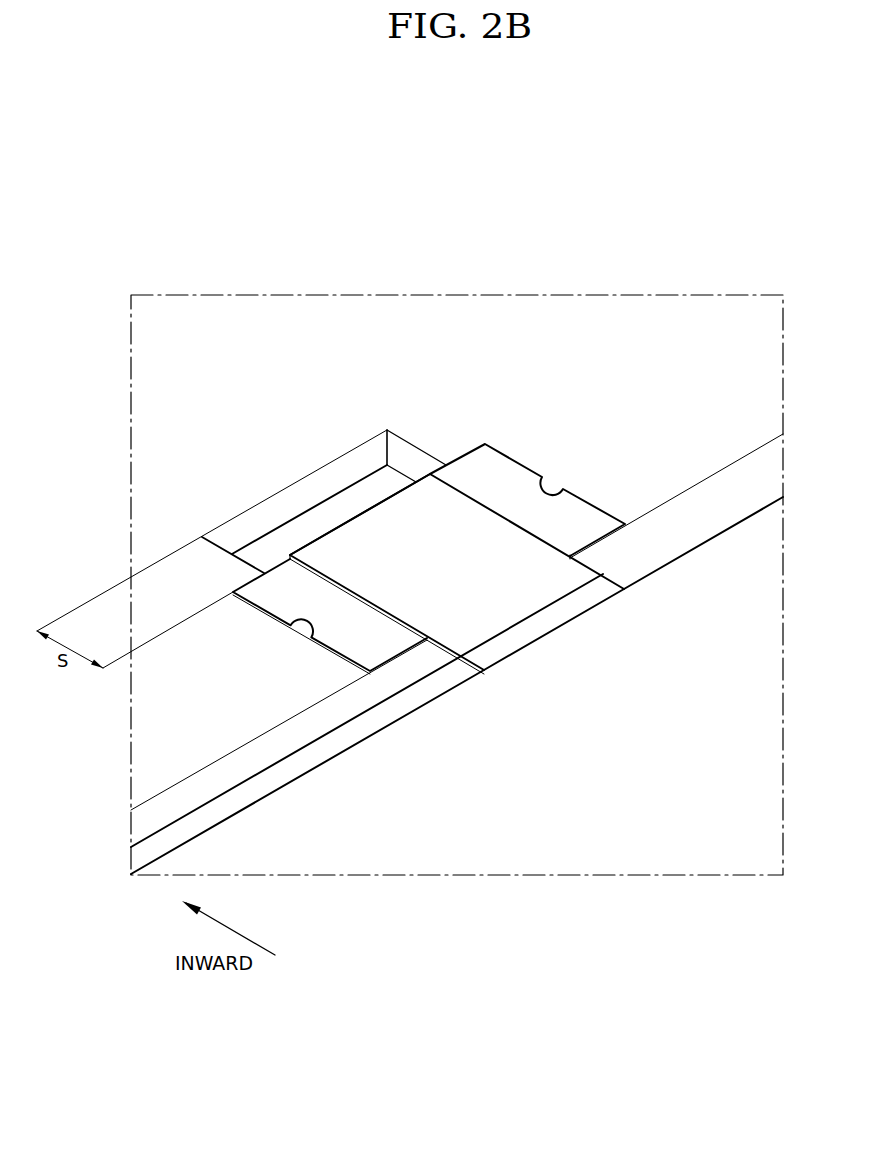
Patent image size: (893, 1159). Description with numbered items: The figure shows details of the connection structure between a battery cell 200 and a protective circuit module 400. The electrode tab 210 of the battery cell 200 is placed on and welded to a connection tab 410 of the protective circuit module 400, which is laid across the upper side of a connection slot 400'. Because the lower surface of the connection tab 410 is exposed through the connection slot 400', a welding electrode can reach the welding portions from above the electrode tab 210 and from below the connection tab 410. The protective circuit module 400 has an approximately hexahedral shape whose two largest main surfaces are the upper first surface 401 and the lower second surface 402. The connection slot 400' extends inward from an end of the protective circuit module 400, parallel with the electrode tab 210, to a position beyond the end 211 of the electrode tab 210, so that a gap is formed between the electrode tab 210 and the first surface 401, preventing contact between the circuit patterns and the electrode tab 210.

The battery cell 200 is at (640, 745).
The electrode tab 210 is at (507, 456).
The end of the electrode tab 211 is at (368, 507).
The protective circuit module 400 is at (410, 557).
The connection slot 400' is at (294, 406).
The first surface 401 is at (160, 793).
The second surface 402 is at (168, 826).
The connection tab 410 is at (502, 477).